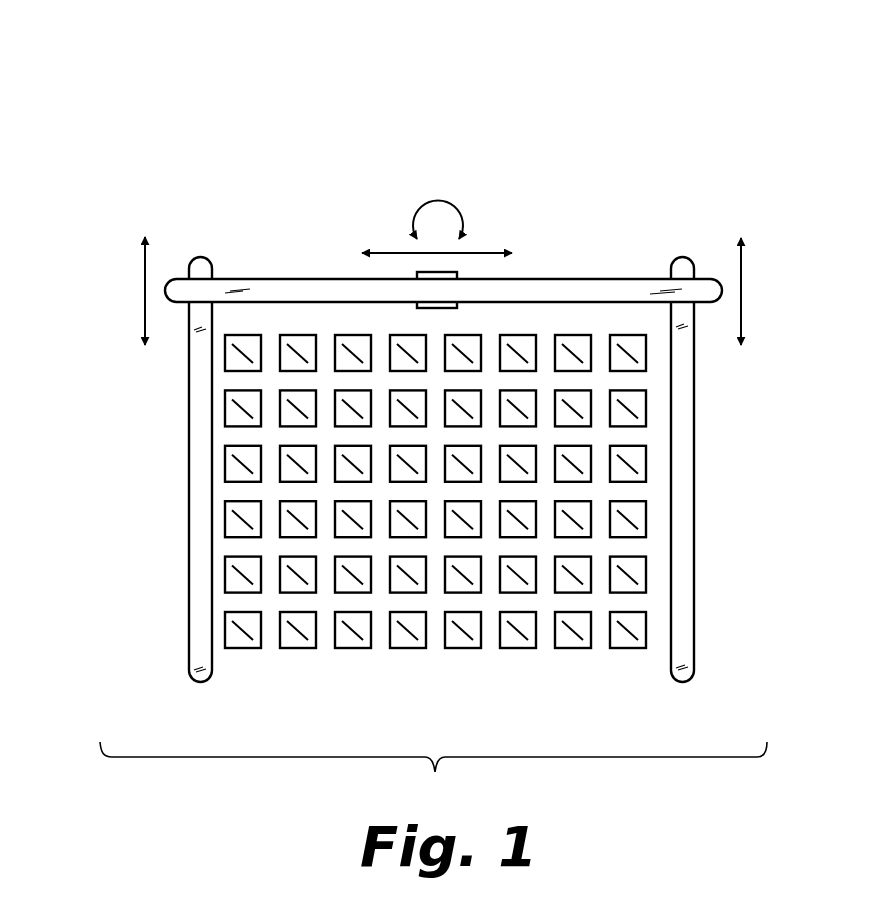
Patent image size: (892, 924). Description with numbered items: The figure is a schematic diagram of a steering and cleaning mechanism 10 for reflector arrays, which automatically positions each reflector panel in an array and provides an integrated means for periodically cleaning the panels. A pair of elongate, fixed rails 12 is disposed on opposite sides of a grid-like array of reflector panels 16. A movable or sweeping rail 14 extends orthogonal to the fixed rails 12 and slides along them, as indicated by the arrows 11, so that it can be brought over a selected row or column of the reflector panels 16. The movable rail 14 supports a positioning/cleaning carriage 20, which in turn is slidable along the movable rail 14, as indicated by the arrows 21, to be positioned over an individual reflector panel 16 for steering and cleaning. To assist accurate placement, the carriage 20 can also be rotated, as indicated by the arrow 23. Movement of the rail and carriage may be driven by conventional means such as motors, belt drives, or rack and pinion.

The steering and cleaning mechanism 10 is at (286, 76).
The arrows 11 is at (145, 268).
The fixed rails 12 is at (188, 587).
The movable rail 14 is at (572, 278).
The reflector panels 16 is at (408, 648).
The positioning/cleaning carriage 20 is at (478, 312).
The arrows 21 is at (477, 250).
The arrow 23 is at (450, 202).